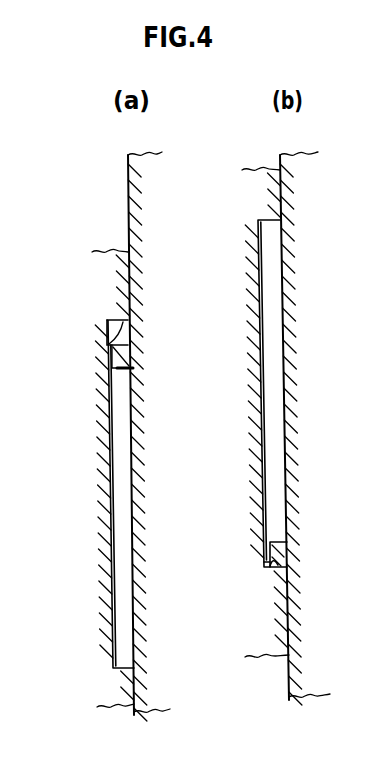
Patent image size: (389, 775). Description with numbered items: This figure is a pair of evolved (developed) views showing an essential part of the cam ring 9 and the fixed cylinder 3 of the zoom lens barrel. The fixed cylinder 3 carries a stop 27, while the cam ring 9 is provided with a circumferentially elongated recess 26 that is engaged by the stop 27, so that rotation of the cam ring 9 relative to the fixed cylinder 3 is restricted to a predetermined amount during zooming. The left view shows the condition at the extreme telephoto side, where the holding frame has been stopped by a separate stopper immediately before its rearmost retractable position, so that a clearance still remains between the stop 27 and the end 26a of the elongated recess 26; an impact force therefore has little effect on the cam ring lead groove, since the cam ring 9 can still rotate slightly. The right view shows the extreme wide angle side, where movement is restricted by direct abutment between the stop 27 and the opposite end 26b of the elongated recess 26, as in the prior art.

The fixed cylinder 3 is at (165, 312).
The cam ring 9 is at (103, 301).
The circumferentially elongated recess 26 is at (108, 406).
The end of elongated recess 26a is at (107, 342).
The end of elongated recess 26b is at (268, 566).
The stop 27 is at (128, 369).